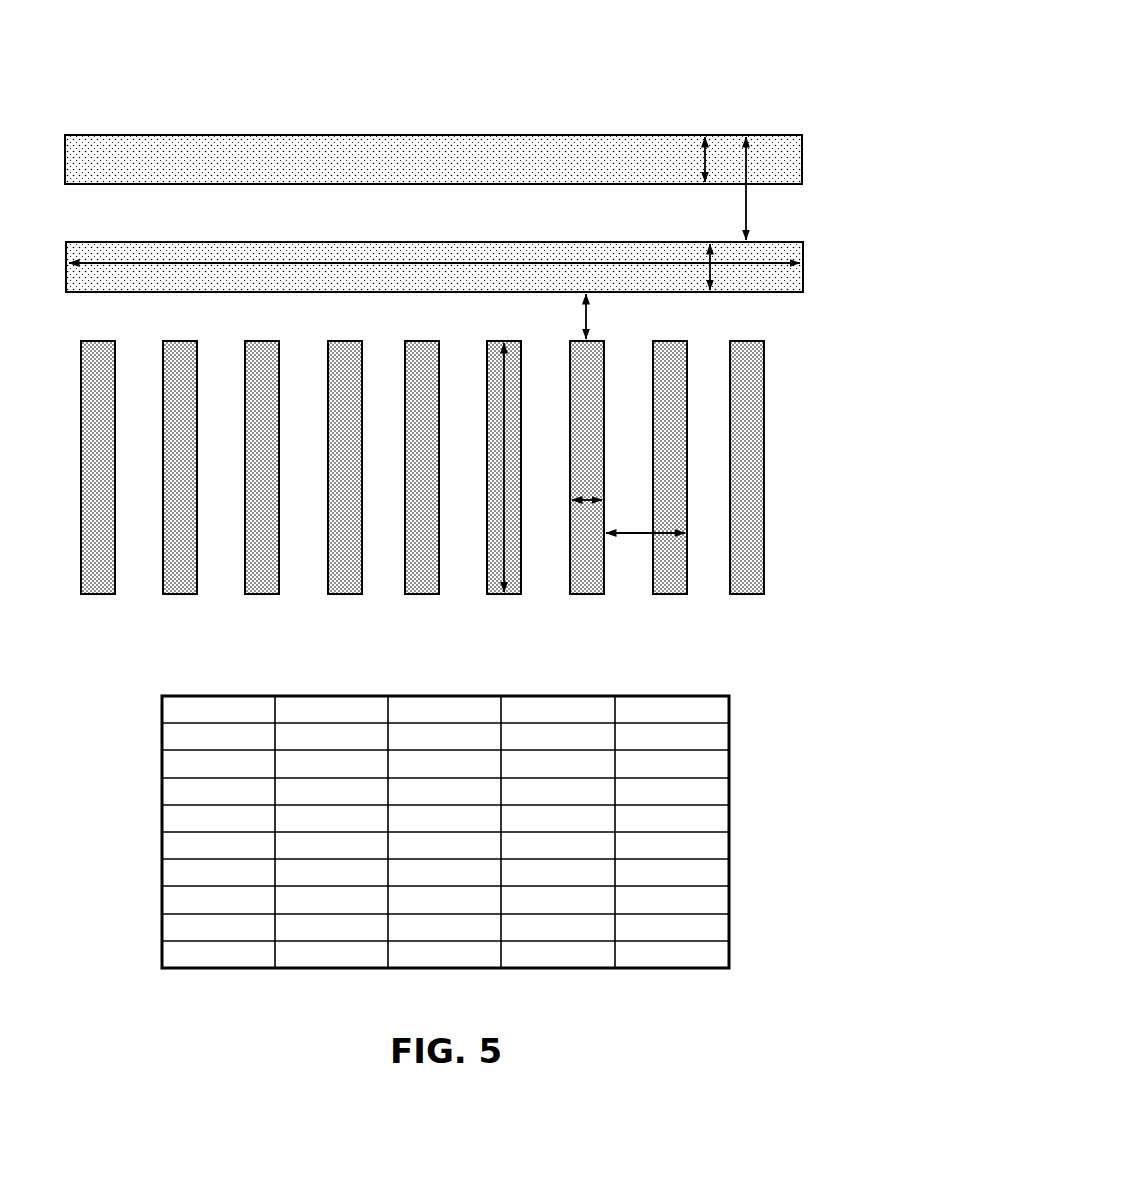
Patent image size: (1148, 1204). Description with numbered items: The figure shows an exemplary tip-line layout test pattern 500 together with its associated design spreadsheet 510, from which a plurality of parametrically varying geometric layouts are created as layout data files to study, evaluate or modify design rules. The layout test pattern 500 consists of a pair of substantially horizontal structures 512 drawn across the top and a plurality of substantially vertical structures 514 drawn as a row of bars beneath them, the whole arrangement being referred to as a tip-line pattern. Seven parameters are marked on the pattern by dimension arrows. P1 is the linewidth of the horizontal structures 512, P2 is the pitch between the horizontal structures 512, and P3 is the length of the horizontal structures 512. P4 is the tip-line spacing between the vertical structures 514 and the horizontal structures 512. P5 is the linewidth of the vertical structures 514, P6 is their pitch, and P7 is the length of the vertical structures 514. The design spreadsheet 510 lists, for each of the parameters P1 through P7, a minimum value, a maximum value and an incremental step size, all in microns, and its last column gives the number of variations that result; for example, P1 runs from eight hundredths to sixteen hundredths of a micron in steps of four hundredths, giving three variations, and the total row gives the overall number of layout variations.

The layout test pattern 500 is at (434, 329).
The design spreadsheet 510 is at (687, 1020).
The horizontal structures 512 is at (343, 183).
The vertical structures 514 is at (432, 596).
The linewidth of horizontal structures P1 is at (722, 272).
The pitch of horizontal structures P2 is at (752, 199).
The length of horizontal structures P3 is at (607, 263).
The tip-line spacing P4 is at (592, 318).
The linewidth of vertical structures P5 is at (508, 489).
The pitch of vertical structures P6 is at (605, 488).
The length of vertical structures P7 is at (642, 526).